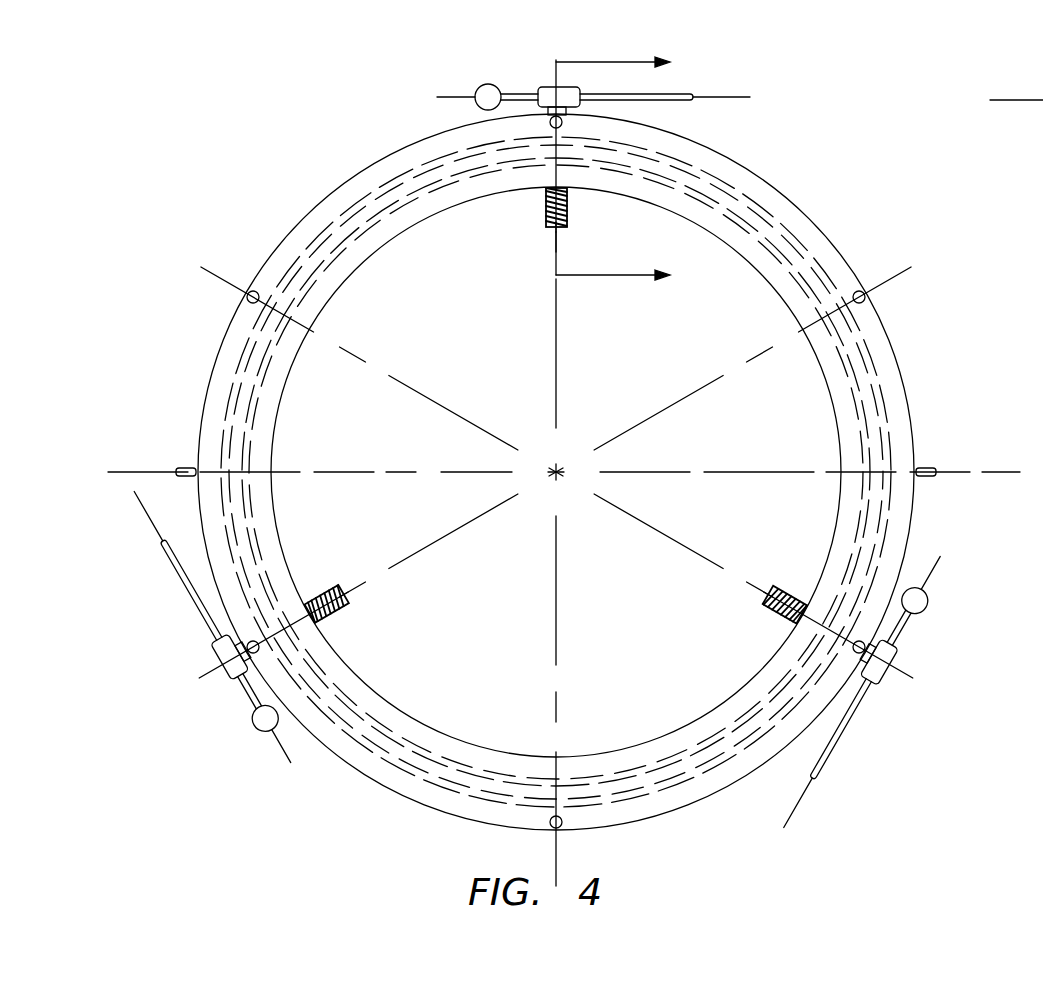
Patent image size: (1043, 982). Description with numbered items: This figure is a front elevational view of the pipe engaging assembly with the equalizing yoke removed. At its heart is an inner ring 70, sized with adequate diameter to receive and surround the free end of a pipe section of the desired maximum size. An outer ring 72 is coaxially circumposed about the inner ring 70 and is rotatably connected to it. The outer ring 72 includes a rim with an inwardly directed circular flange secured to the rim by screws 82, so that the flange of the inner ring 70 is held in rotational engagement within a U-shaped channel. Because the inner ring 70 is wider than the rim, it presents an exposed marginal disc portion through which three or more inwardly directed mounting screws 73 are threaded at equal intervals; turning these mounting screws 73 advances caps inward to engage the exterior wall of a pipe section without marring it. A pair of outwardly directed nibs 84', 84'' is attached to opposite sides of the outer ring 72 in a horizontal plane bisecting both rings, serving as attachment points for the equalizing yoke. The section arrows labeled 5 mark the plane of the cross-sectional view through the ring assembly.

The section line 5- 5 is at (629, 168).
The inner ring 70 is at (733, 230).
The outer ring 72 is at (348, 201).
The mounting screws 73 is at (545, 88).
The screws 82 is at (246, 297).
The nib 84' is at (163, 439).
The nib 84'' is at (977, 441).